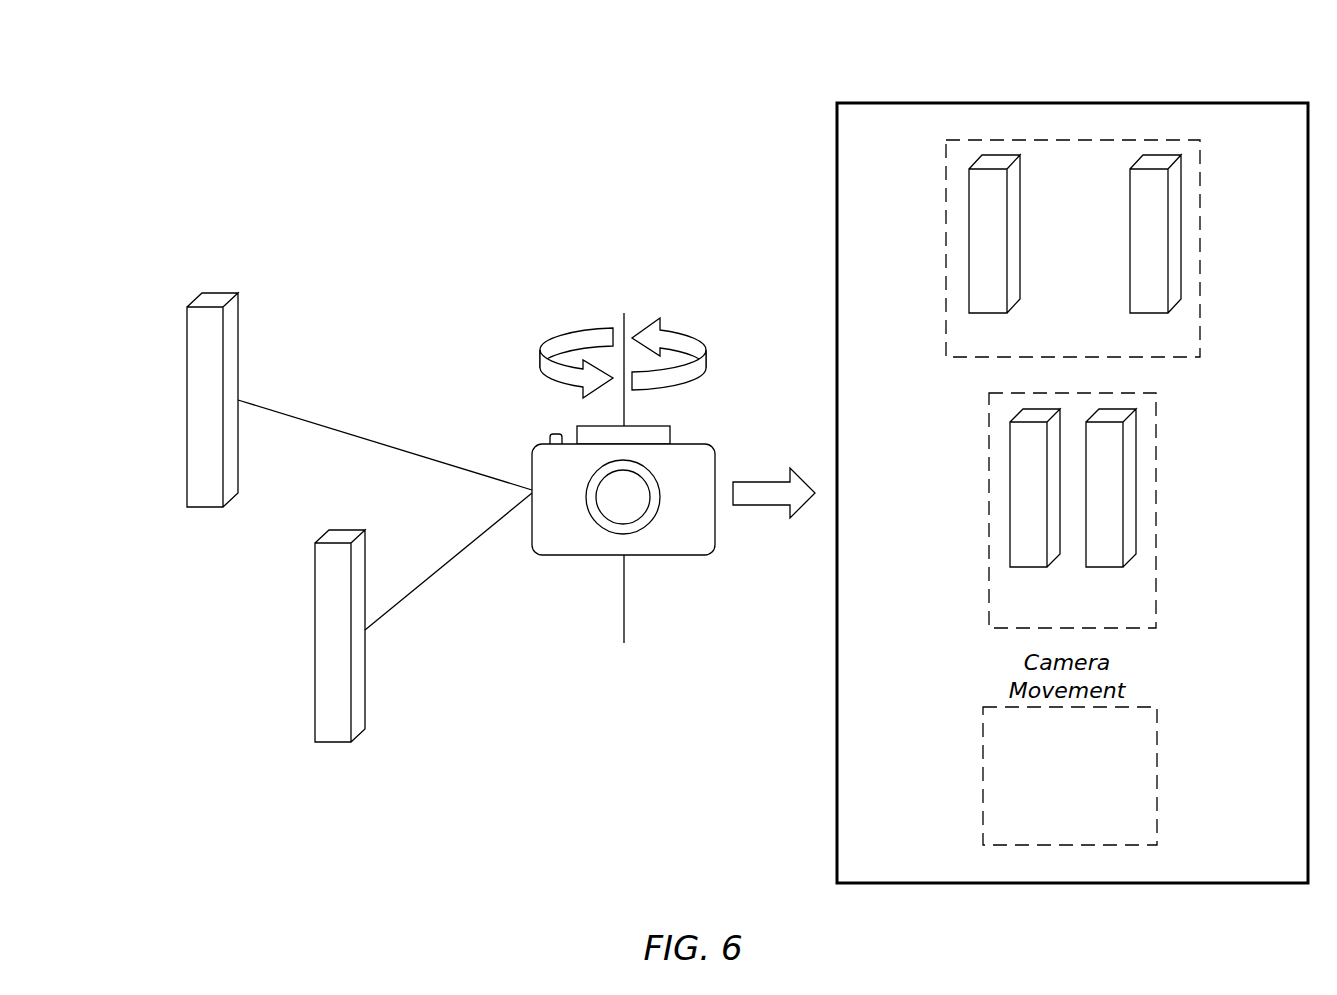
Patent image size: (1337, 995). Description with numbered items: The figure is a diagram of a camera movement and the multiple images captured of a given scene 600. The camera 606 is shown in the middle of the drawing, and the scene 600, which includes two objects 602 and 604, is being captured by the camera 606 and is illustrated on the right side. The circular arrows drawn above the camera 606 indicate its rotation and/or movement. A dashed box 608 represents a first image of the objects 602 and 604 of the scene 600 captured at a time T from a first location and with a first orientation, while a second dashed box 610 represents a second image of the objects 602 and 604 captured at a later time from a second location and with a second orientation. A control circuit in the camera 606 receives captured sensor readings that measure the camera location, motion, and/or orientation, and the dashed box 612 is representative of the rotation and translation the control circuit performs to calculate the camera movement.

The scene 600 is at (215, 97).
The object 602 is at (187, 426).
The object 604 is at (313, 670).
The camera 606 is at (716, 535).
The dashed box 608 is at (1201, 216).
The dashed box 610 is at (1157, 466).
The dashed box 612 is at (1158, 776).